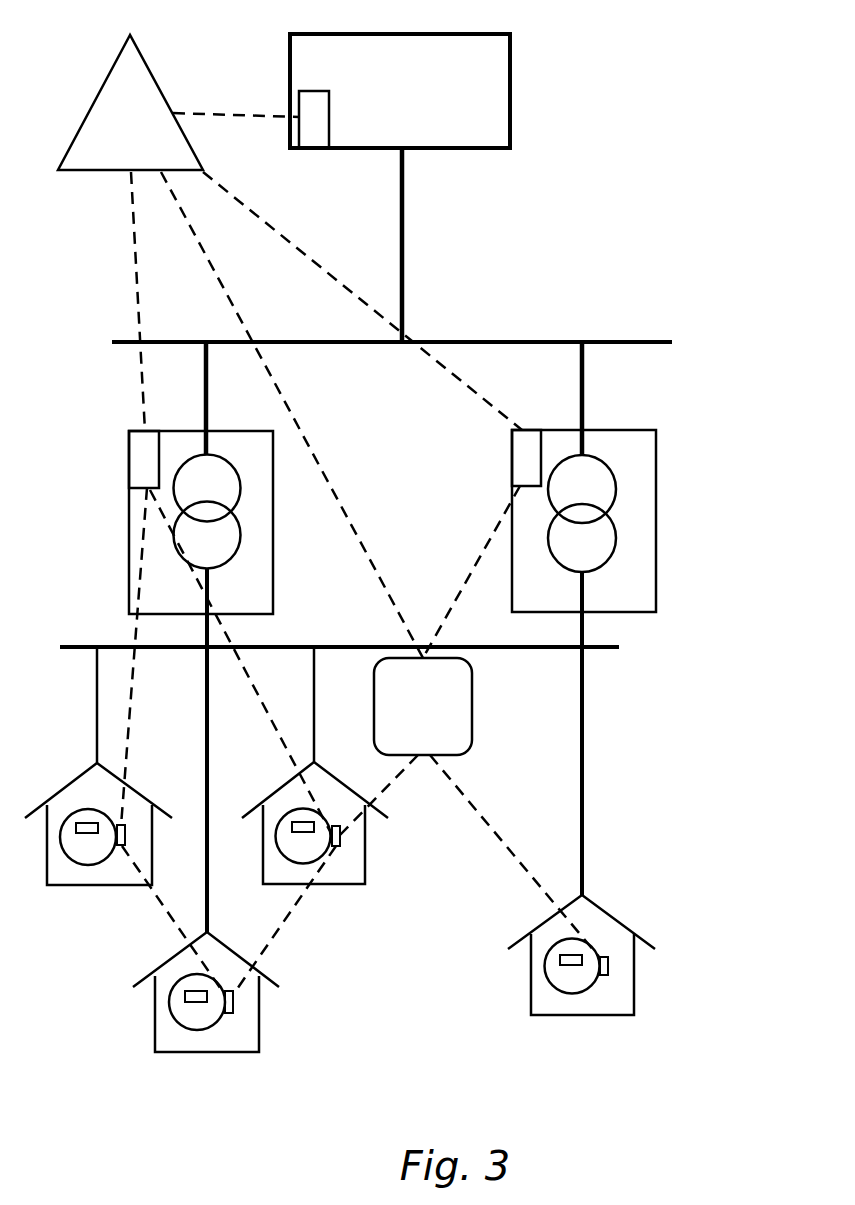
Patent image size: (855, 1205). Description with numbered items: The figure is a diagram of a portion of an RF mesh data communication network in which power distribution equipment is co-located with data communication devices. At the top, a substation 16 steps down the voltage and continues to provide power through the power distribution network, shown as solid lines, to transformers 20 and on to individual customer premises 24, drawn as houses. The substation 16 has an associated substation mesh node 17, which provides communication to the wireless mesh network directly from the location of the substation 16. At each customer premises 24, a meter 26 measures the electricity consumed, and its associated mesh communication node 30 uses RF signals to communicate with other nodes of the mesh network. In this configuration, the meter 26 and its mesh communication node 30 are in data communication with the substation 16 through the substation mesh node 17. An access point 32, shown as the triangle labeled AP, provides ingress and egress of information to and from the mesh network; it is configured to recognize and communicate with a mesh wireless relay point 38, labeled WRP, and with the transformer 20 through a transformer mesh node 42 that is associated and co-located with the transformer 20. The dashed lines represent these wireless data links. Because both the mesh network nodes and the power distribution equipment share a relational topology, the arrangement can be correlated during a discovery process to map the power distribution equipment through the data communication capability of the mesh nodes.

The substation 16 is at (512, 76).
The substation mesh node 17 is at (312, 138).
The transformer 20 is at (657, 465).
The customer premises 24 is at (590, 898).
The meter 26 is at (545, 967).
The mesh communication node 30 is at (608, 966).
The access point 32 is at (155, 77).
The mesh wireless relay point 38 is at (473, 700).
The transformer mesh node 42 is at (512, 470).